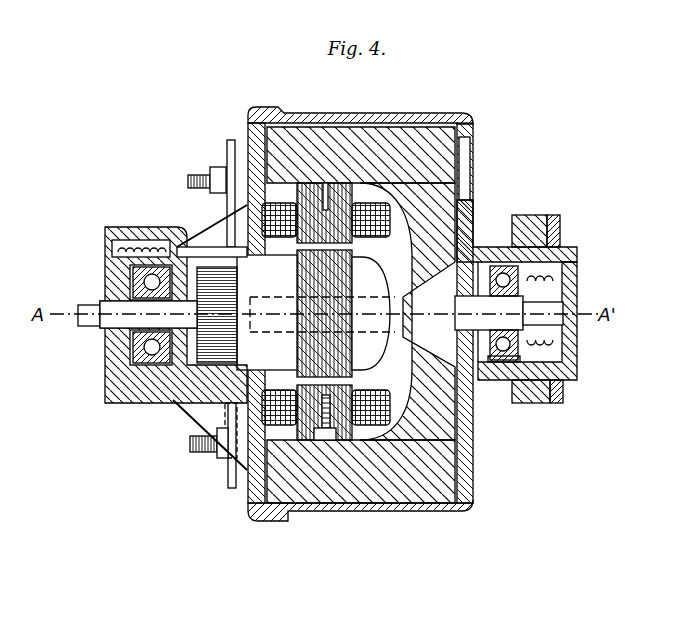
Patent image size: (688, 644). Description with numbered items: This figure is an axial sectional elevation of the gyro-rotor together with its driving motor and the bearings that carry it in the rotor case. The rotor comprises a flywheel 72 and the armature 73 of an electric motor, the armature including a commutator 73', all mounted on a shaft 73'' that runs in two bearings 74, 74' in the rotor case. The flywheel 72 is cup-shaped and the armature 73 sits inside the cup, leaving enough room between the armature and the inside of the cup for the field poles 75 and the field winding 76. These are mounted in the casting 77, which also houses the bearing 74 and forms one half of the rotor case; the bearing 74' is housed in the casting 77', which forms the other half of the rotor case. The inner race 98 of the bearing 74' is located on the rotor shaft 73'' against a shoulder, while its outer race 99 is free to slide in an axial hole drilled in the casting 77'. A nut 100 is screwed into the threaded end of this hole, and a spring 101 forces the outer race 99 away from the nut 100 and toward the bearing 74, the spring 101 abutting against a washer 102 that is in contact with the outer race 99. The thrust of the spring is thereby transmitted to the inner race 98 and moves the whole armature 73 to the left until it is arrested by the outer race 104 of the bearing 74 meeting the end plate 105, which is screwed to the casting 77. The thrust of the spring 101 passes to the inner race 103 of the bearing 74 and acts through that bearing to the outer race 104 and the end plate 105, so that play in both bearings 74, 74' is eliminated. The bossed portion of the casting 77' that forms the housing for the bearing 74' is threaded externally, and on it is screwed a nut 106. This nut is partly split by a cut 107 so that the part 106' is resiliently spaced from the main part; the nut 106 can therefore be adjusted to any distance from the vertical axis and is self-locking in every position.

The flywheel 72 is at (437, 492).
The armature 73 is at (201, 294).
The commutator 73' is at (195, 255).
The shaft 73'' is at (444, 236).
The bearing 74 is at (136, 209).
The bearing 74' is at (567, 432).
The field poles 75 is at (247, 128).
The field winding 76 is at (373, 203).
The casting 77 is at (193, 373).
The casting 77' is at (517, 189).
The inner race 98 is at (507, 352).
The outer race 99 is at (520, 216).
The nut 100 is at (578, 304).
The spring 101 is at (565, 280).
The washer 102 is at (578, 247).
The inner race 103 is at (107, 230).
The outer race 104 is at (103, 356).
The end plate 105 is at (103, 270).
The nut 106 is at (590, 355).
The part 106' is at (584, 223).
The cut 107 is at (556, 217).